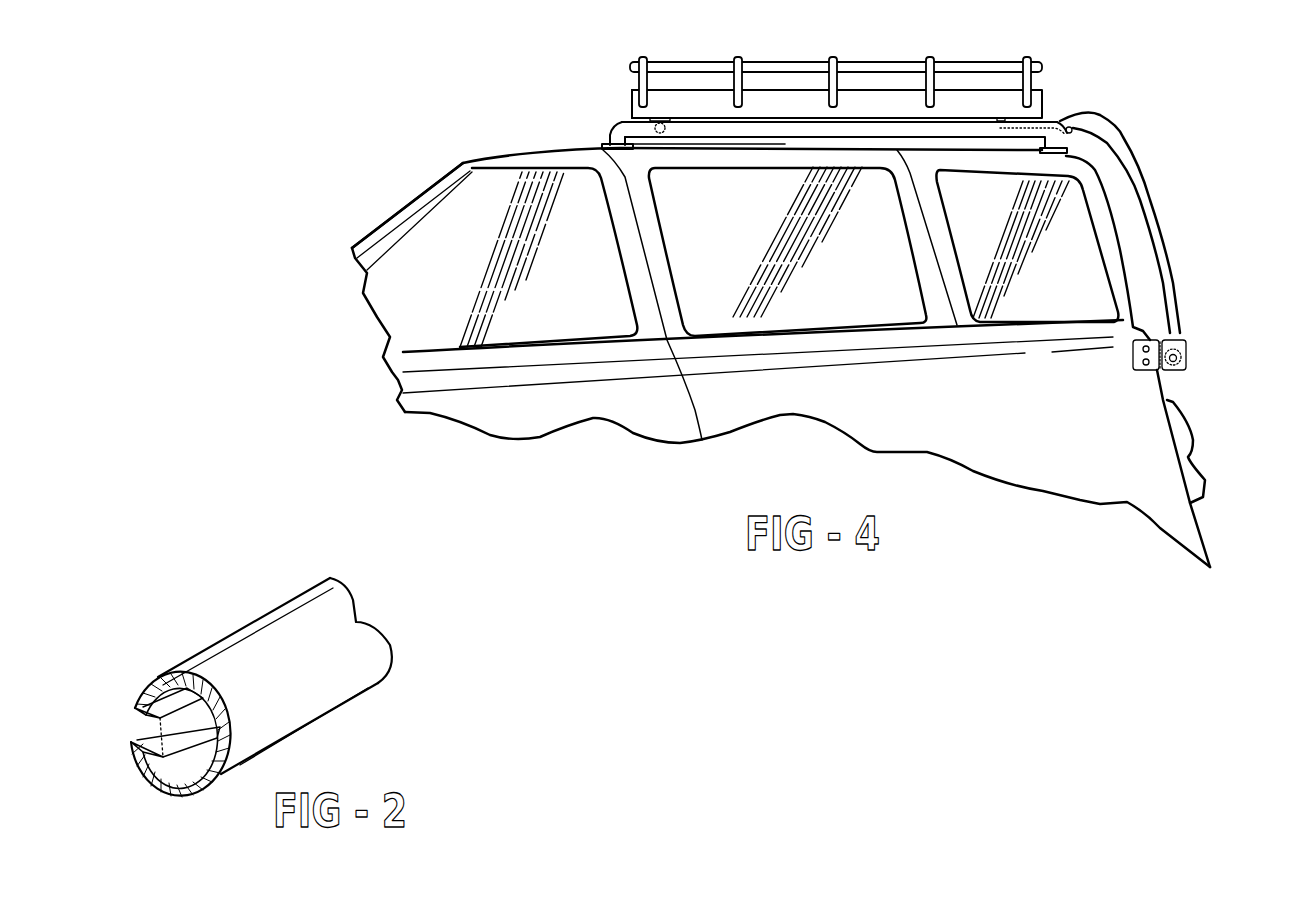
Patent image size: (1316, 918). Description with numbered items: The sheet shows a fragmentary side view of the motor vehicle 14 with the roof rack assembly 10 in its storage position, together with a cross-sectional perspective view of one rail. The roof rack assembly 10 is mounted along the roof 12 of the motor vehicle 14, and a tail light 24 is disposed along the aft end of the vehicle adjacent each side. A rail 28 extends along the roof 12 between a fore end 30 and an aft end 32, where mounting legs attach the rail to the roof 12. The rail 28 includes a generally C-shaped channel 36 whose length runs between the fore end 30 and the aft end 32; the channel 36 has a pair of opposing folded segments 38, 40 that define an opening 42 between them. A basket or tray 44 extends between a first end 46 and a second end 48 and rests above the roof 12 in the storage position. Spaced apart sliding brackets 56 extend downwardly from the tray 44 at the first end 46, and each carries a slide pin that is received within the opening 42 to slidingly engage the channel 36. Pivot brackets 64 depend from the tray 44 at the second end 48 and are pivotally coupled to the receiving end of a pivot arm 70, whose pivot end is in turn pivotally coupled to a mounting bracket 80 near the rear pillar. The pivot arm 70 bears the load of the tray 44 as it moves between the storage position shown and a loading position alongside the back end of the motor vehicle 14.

In FIG. 4, the roof rack assembly 10 is at (585, 90).
In FIG. 4, the roof 12 is at (500, 149).
In FIG. 4, the motor vehicle 14 is at (403, 205).
In FIG. 4, the tail light 24 is at (1203, 483).
In FIG. 4, the rail 28 is at (788, 140).
In FIG. 4, the fore end 30 is at (612, 124).
In FIG. 4, the aft end 32 is at (1062, 121).
In FIG. 2, the channel 36 is at (205, 702).
In FIG. 2, the folded segment 38 is at (152, 678).
In FIG. 2, the folded segment 40 is at (155, 785).
In FIG. 2, the opening 42 is at (132, 724).
In FIG. 4, the tray 44 is at (1027, 60).
In FIG. 4, the first end 46 is at (630, 100).
In FIG. 4, the second end 48 is at (1043, 100).
In FIG. 4, the sliding bracket 56 is at (668, 130).
In FIG. 4, the pivot bracket 64 is at (1074, 131).
In FIG. 4, the pivot arm 70 is at (1160, 265).
In FIG. 4, the mounting bracket 80 is at (1192, 375).